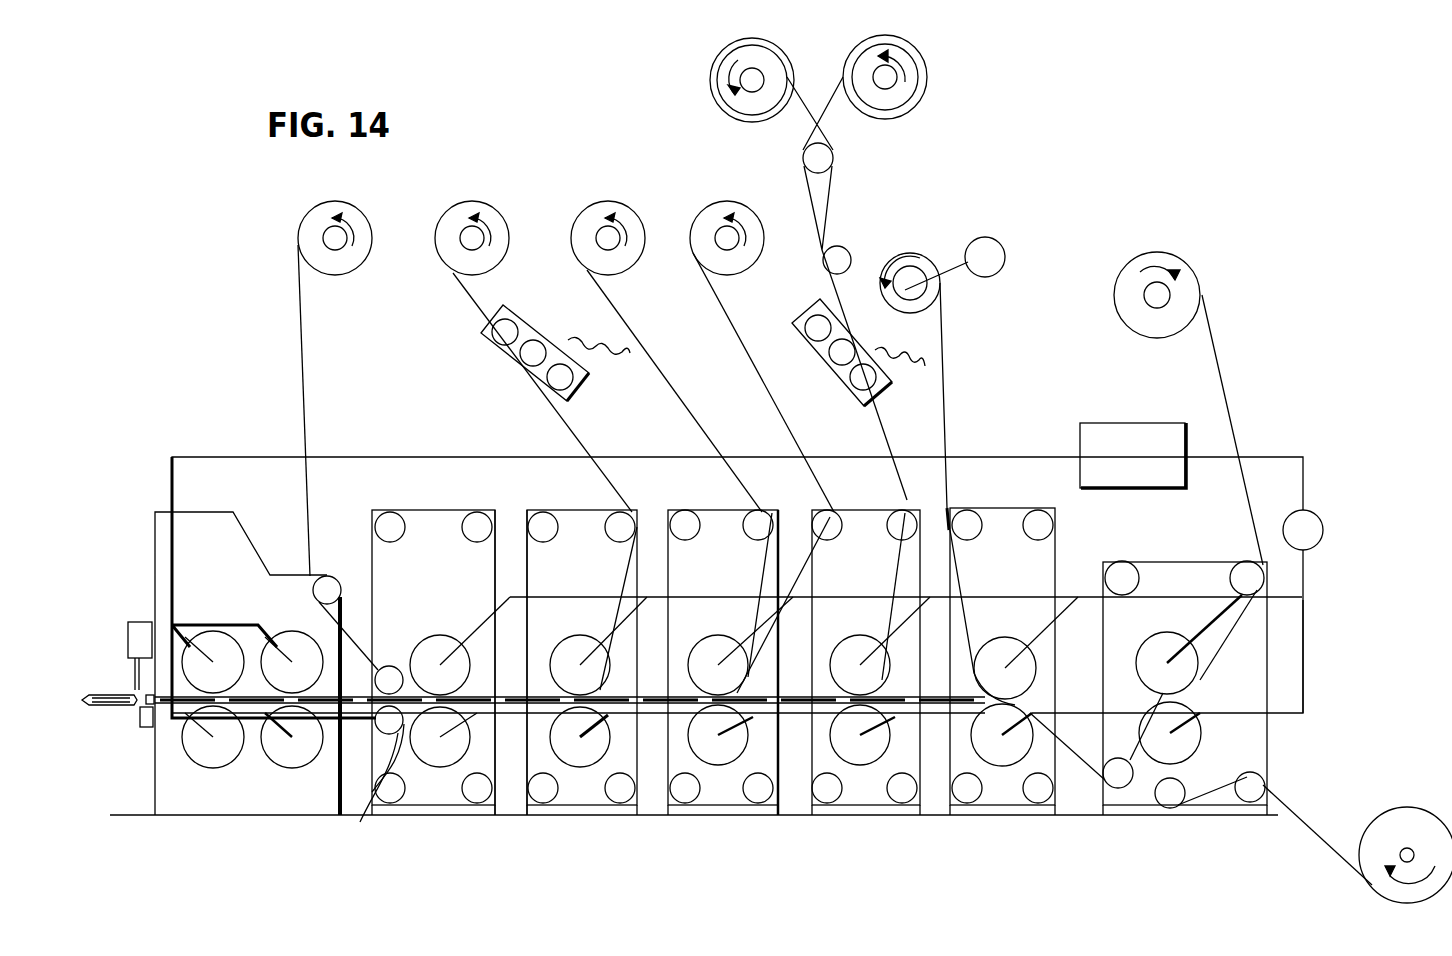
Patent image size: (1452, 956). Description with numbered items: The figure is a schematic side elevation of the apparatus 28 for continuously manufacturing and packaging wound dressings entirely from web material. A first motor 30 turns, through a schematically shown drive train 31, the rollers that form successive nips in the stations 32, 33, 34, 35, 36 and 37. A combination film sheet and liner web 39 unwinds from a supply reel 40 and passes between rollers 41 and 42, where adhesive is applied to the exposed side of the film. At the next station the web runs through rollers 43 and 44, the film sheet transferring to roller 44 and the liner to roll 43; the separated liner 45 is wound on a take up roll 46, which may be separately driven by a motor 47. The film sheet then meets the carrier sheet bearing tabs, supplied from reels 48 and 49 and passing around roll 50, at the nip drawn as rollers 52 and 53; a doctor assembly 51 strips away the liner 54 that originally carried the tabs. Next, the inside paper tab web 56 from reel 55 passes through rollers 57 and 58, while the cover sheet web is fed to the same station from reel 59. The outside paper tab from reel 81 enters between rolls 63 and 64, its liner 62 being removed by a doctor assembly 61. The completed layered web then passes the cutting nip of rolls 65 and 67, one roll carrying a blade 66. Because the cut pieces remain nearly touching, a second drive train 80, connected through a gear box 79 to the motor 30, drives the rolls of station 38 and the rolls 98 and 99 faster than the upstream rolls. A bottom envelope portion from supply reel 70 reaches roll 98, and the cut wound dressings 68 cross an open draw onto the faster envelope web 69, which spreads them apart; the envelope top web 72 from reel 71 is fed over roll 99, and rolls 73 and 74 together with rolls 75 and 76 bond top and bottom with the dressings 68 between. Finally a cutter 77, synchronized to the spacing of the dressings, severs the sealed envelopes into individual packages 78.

The apparatus 28 is at (262, 453).
The first motor 30 is at (1322, 525).
The drive train 31 is at (1310, 628).
The station 32 is at (1170, 808).
The station 33 is at (1008, 808).
The station 34 is at (860, 808).
The station 35 is at (718, 808).
The station 36 is at (596, 808).
The station 37 is at (448, 808).
The station 38 is at (243, 810).
The combination film sheet and liner web 39 is at (1235, 393).
The supply reel 40 is at (1146, 327).
The roller 41 is at (1153, 645).
The roller 42 is at (1200, 742).
The roll 43 is at (1000, 648).
The roller 44 is at (1005, 756).
The separated liner 45 is at (947, 398).
The take up roll 46 is at (928, 258).
The motor 47 is at (996, 246).
The reel 48 is at (740, 62).
The reel 49 is at (912, 73).
The roll 50 is at (833, 157).
The doctor assembly 51 is at (835, 330).
The upper roller 52 is at (846, 650).
The lower roller 53 is at (870, 755).
The liner 54 is at (905, 345).
The reel 55 is at (727, 210).
The inside paper tab web 56 is at (773, 393).
The roller 57 is at (700, 648).
The roller 58 is at (726, 755).
The reel 59 is at (610, 206).
The doctor assembly 61 is at (535, 330).
The liner 62 is at (603, 365).
The roll 63 is at (567, 648).
The roll 64 is at (562, 735).
The roll 65 is at (428, 640).
The blade 66 is at (441, 630).
The roll 67 is at (438, 755).
The cut wound dressings 68 is at (355, 707).
The envelope web 69 is at (508, 806).
The supply reel 70 is at (1407, 807).
The reel 71 is at (343, 267).
The envelope top web 72 is at (310, 426).
The roll 73 is at (290, 634).
The roll 74 is at (297, 754).
The roll 75 is at (213, 631).
The roll 76 is at (198, 752).
The cutter 77 is at (137, 625).
The individual packages 78 is at (105, 694).
The gear box 79 is at (1167, 478).
The drive train 80 is at (175, 540).
The reel 81 is at (495, 255).
The roll 98 is at (374, 787).
The roll 99 is at (393, 666).